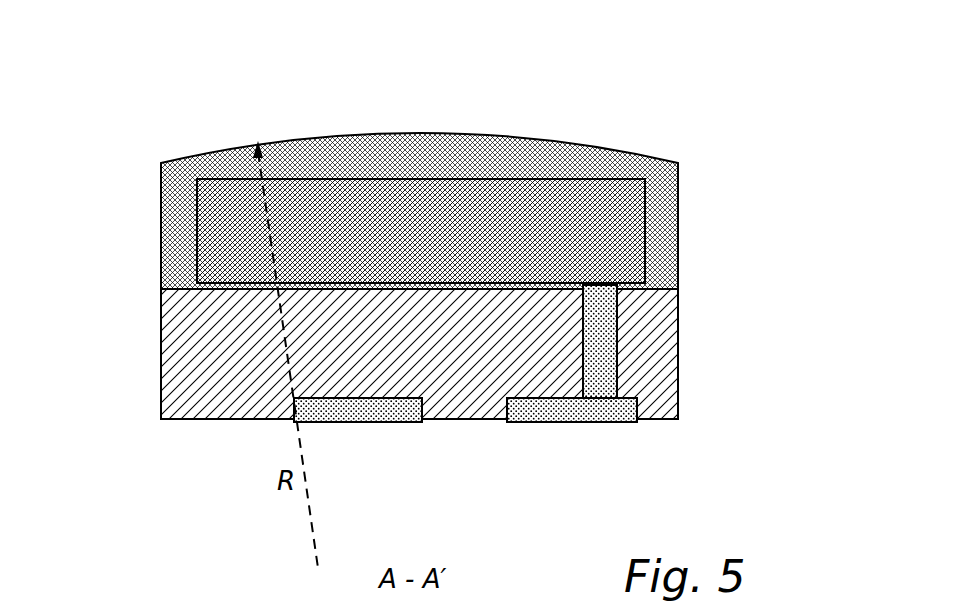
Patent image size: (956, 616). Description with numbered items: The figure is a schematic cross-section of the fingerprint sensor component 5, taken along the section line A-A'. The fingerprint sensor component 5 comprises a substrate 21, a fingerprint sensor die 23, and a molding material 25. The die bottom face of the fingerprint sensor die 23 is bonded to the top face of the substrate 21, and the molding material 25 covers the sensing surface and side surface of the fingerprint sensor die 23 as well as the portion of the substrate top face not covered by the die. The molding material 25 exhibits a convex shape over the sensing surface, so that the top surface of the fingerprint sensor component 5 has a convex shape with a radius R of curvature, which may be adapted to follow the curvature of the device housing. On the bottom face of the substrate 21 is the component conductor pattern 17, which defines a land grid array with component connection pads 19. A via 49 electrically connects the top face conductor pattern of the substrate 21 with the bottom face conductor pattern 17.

The fingerprint sensor component 5 is at (420, 281).
The molding material 25 is at (473, 130).
The fingerprint sensor die 23 is at (221, 238).
The substrate 21 is at (193, 328).
The via 49 is at (609, 352).
The component connection pads 19 is at (357, 422).
The component conductor pattern 17 is at (430, 450).